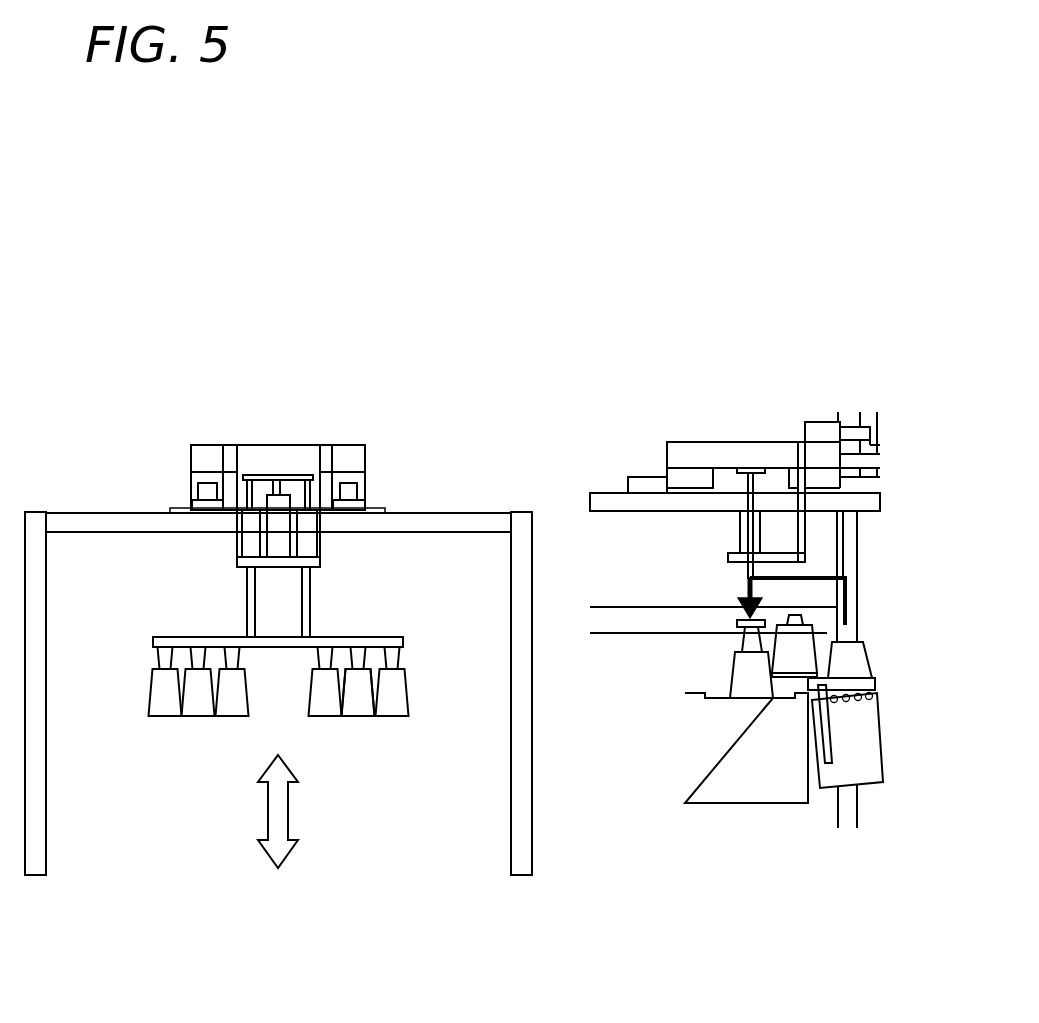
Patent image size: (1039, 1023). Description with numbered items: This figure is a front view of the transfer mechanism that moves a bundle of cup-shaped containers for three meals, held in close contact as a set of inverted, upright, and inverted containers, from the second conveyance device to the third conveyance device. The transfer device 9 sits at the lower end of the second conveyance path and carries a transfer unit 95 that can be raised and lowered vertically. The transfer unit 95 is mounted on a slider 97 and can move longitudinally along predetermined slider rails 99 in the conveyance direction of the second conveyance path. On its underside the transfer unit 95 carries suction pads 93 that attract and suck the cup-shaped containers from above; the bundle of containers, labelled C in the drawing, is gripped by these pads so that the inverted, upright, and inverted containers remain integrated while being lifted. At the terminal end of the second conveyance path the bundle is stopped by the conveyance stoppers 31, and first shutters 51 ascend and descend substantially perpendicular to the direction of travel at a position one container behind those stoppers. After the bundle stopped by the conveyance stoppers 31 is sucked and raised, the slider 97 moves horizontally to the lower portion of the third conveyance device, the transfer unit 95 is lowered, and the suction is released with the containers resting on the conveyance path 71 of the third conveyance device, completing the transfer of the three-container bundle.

The transfer device 9 is at (155, 475).
The slider 97 is at (323, 443).
The slider rails 99 is at (353, 490).
The transfer unit 95 is at (153, 642).
The suction pads 93 is at (400, 660).
The nozzle C is at (358, 705).
The conveyance path 71 is at (743, 792).
The first shutters 51 is at (877, 693).
The conveyance stoppers 31 is at (830, 787).